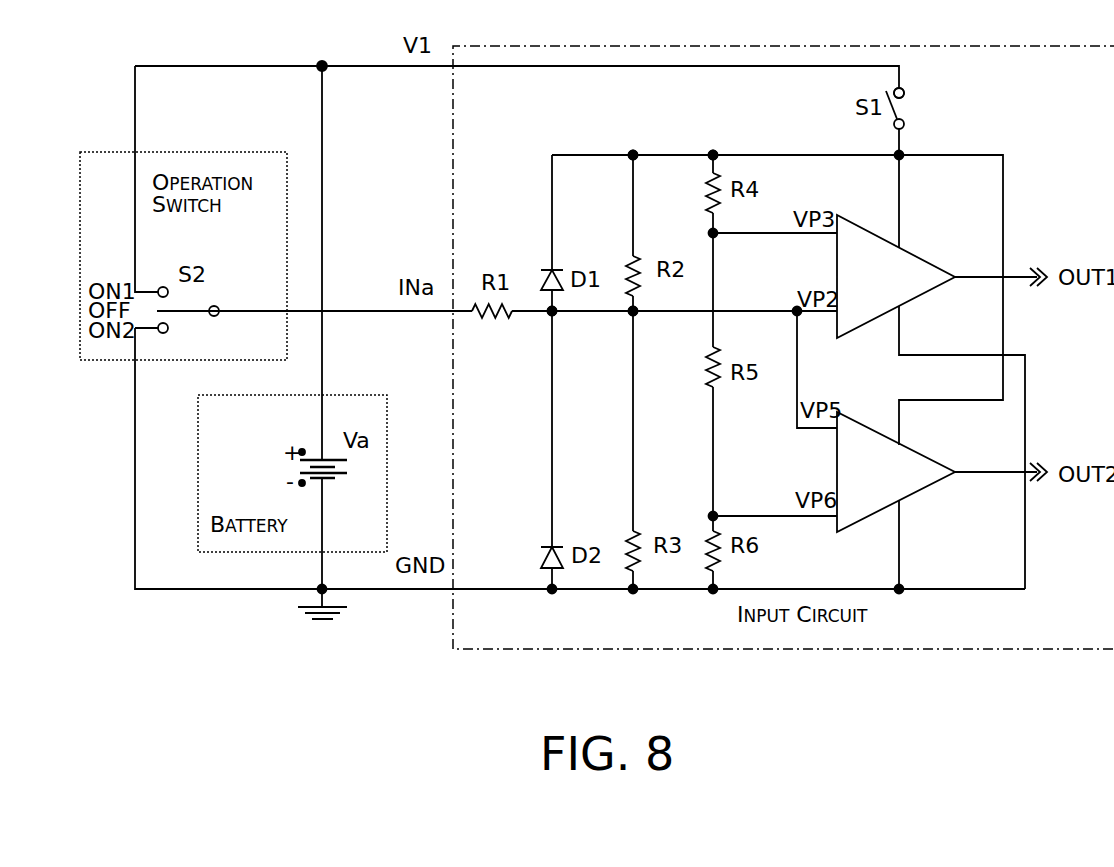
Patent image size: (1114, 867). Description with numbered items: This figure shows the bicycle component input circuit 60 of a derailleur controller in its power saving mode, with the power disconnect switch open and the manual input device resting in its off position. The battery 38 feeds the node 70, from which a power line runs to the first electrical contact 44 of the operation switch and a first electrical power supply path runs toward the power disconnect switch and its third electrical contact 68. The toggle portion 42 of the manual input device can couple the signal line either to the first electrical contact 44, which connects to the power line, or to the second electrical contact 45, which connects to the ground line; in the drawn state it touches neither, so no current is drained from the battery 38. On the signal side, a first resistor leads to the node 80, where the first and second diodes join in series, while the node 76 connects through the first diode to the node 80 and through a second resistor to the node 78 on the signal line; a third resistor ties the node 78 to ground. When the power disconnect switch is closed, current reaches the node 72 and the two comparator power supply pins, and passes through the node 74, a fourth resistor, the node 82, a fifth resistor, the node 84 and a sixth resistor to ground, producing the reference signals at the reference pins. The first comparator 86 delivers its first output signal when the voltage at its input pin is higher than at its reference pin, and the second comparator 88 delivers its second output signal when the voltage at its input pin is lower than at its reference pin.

The power source 38 is at (387, 485).
The toggle portion 42 is at (190, 311).
The first electrical contact 44 is at (160, 287).
The second electrical contact 45 is at (165, 333).
The input circuit 60 is at (958, 649).
The third electrical contact 68 is at (903, 90).
The node 70 is at (322, 62).
The node 72 is at (903, 152).
The node 74 is at (713, 151).
The node 76 is at (633, 151).
The node 78 is at (633, 316).
The node 80 is at (552, 316).
The node 82 is at (710, 232).
The node 84 is at (710, 515).
The first comparator 86 is at (836, 272).
The second comparator 88 is at (836, 470).